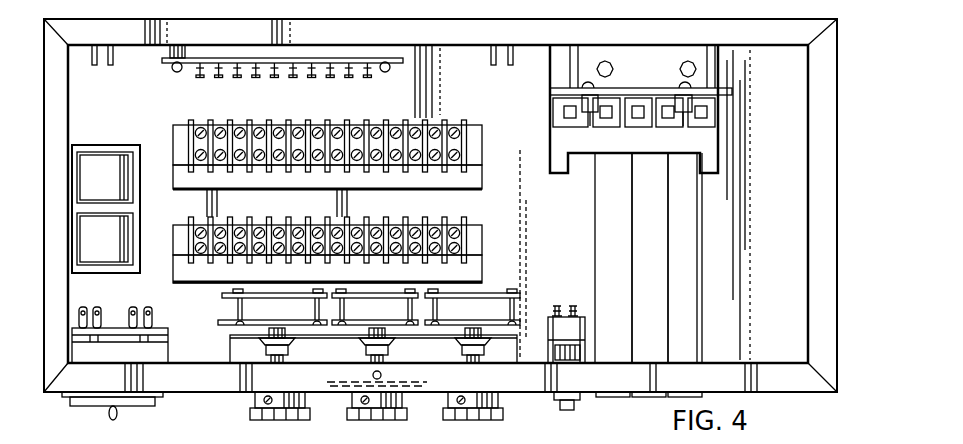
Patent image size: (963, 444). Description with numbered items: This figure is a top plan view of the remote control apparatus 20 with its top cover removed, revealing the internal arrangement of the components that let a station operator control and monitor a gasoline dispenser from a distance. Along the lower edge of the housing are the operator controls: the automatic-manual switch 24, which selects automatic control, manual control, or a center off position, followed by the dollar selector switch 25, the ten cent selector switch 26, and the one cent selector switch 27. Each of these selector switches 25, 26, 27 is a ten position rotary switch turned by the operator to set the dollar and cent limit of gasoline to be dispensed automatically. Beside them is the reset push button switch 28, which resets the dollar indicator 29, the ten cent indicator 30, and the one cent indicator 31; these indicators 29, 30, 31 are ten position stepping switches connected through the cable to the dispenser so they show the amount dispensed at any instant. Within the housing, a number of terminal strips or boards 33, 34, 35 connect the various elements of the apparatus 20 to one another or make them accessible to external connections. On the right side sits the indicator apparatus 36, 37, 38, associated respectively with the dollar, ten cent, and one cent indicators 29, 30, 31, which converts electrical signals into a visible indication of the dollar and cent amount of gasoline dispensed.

The remote control apparatus 20 is at (124, 12).
The automatic-manual switch 24 is at (112, 416).
The dollar selector switch 25 is at (254, 418).
The ten cent selector switch 26 is at (356, 421).
The one cent selector switch 27 is at (453, 421).
The reset push button switch 28 is at (561, 411).
The dollar indicator 29 is at (617, 398).
The ten cent indicator 30 is at (650, 398).
The one cent indicator 31 is at (700, 397).
The terminal strip 33 is at (238, 78).
The terminal strip 34 is at (328, 118).
The terminal strip 35 is at (474, 232).
The indicator apparatus 36 is at (621, 237).
The indicator apparatus 37 is at (657, 237).
The indicator apparatus 38 is at (694, 237).